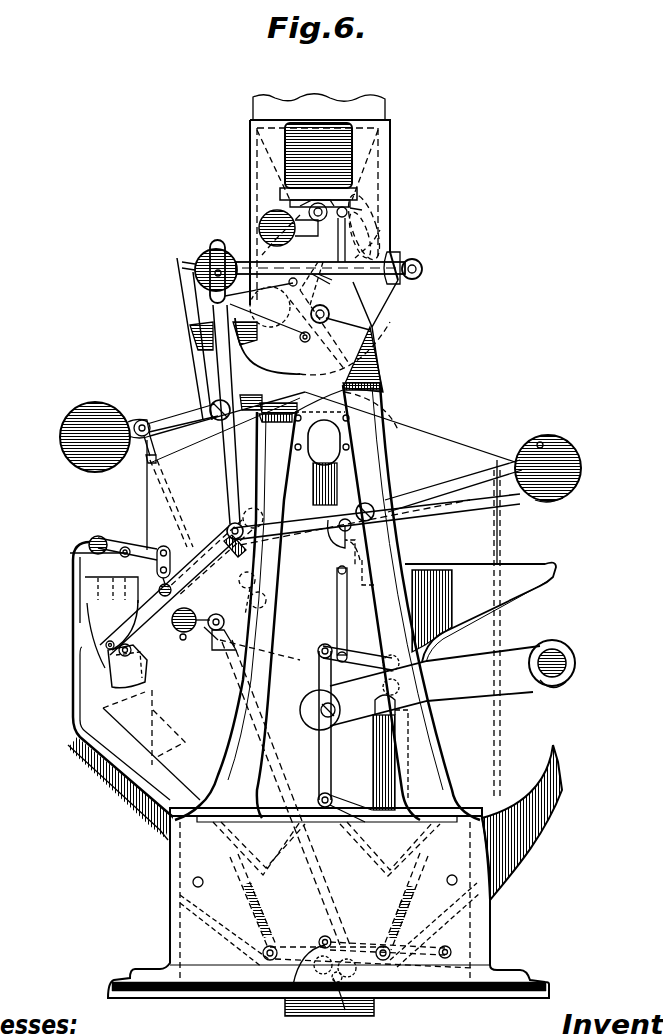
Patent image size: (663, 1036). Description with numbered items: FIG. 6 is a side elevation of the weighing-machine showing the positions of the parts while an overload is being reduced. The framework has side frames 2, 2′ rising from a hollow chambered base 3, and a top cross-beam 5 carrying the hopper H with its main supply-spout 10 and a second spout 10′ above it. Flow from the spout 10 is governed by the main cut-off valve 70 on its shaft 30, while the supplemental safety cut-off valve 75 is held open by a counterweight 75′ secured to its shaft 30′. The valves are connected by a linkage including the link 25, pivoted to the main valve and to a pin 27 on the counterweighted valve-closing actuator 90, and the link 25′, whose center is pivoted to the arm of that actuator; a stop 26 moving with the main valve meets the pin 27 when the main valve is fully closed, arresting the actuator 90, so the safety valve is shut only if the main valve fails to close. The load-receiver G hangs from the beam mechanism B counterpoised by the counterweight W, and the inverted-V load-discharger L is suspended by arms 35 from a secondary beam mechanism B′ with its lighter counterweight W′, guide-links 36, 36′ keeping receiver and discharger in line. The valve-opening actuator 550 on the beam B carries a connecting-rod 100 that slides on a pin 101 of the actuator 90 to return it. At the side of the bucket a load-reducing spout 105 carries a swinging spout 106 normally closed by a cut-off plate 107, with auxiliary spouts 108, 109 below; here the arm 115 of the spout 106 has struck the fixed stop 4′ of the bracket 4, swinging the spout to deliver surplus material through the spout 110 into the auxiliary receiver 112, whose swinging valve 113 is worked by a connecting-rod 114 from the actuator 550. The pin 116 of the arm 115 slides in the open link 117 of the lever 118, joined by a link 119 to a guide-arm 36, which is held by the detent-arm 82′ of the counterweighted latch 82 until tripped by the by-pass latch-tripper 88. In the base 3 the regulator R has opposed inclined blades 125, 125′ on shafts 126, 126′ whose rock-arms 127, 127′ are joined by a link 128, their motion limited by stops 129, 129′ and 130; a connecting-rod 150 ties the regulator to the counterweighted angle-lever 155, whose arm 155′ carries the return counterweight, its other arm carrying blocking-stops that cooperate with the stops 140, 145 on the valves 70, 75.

The hopper H is at (333, 199).
The top plate or cross-beam 5 is at (324, 136).
The shaft of the safety-valve 30′ is at (315, 207).
The counterweight 75′ is at (272, 222).
The second spout 10′ is at (362, 208).
The valve-closing actuator 90 is at (230, 252).
The supplemental or safety cut-off valve 75 is at (373, 241).
The link 25′ is at (320, 262).
The main supply-spout 10 is at (376, 302).
The pin 27 is at (327, 266).
The pin 101 is at (200, 276).
The stop 145 is at (262, 294).
The stop 26 is at (329, 315).
The link 25 is at (296, 322).
The shaft of the main valve 30 is at (352, 314).
The side frame 2′ is at (333, 356).
The main cut-off valve 70 is at (358, 370).
The stop 140 is at (253, 337).
The arm of the angle-lever 155′ is at (155, 417).
The counterweighted angle-lever 155 is at (211, 412).
The connecting-rod 100 is at (228, 445).
The load-receiver G is at (448, 455).
The valve-opening actuator 550 is at (476, 480).
The side frame 2 is at (375, 460).
The counterweight W is at (573, 494).
The beam mechanism B is at (484, 502).
The small spout 105 is at (145, 510).
The pin 116 is at (168, 546).
The arm 115 is at (127, 538).
The open link 117 is at (130, 548).
The connecting-rod 114 is at (228, 532).
The upper end of the bracket 4′ is at (89, 546).
The swinging spout 106 is at (117, 563).
The lever 118 is at (205, 588).
The spout 110 is at (100, 591).
The link 119 is at (343, 609).
The auxiliary receiver 112 is at (100, 624).
The by-pass latch-tripper 88 is at (262, 619).
The cut-off plate 107 is at (118, 618).
The spout 108 is at (184, 641).
The guide-links 36 is at (364, 661).
The counterweighted latch 82 is at (208, 645).
The detent-arm 82′ is at (222, 658).
The counterweight W′ is at (572, 662).
The secondary beam mechanism B′ is at (435, 686).
The swinging valve 113 is at (124, 676).
The spout 109 is at (182, 718).
The connecting-rod 150 is at (278, 763).
The depending arms or rods 35 is at (324, 748).
The bracket 4 is at (76, 737).
The guide-links 36′ is at (363, 784).
The supporting-base 3 is at (488, 933).
The load-discharger L is at (354, 840).
The stop 129 is at (204, 871).
The stop 129′ is at (452, 875).
The regulator-blade 125 is at (250, 887).
The regulator-blade 125′ is at (396, 878).
The rock-arm 127′ is at (352, 940).
The regulator R is at (399, 915).
The rock-arm 127 is at (293, 948).
The shaft 126 is at (266, 958).
The shaft 126′ is at (392, 954).
The link 128 is at (293, 985).
The stop 130 is at (340, 985).